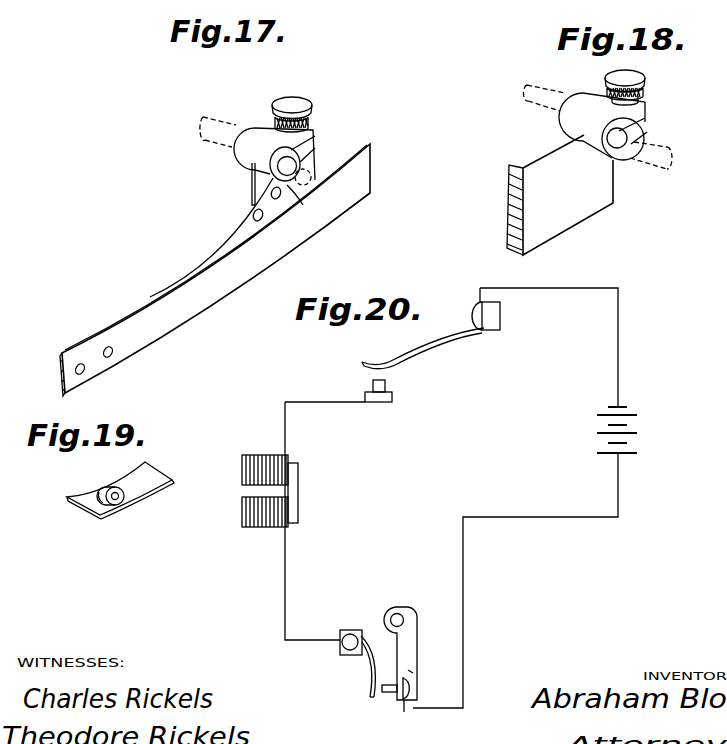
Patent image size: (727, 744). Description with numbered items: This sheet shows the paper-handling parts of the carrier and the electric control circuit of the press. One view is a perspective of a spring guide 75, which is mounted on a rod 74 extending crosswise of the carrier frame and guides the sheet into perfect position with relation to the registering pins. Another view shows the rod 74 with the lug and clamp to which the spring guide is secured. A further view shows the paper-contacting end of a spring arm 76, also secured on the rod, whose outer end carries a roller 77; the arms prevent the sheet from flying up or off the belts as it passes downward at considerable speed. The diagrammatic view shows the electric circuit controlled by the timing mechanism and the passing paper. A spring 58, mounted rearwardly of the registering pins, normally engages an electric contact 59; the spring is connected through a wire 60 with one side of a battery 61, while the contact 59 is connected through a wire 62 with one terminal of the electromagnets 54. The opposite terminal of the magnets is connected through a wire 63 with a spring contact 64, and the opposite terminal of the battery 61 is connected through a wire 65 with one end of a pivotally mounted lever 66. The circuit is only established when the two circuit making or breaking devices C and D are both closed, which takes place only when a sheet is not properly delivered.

In FIG. 20, the electromagnets 54 is at (243, 513).
In FIG. 20, the spring 58 is at (423, 346).
In FIG. 20, the electric contact 59 is at (392, 393).
In FIG. 20, the wire 60 is at (549, 335).
In FIG. 20, the battery 61 is at (632, 430).
In FIG. 20, the wire 62 is at (325, 391).
In FIG. 20, the wire 63 is at (292, 521).
In FIG. 20, the spring contact 64 is at (367, 670).
In FIG. 20, the wire 65 is at (515, 518).
In FIG. 20, the pivotally mounted lever 66 is at (415, 647).
In FIG. 17, the rod 74 is at (252, 137).
In FIG. 18, the rod 74 is at (609, 123).
In FIG. 17, the spring guide 75 is at (168, 296).
In FIG. 19, the spring arm 76 is at (157, 475).
In FIG. 19, the roller 77 is at (115, 487).
In FIG. 20, the circuit making or breaking device C is at (459, 344).
In FIG. 20, the circuit making or breaking device D is at (383, 707).